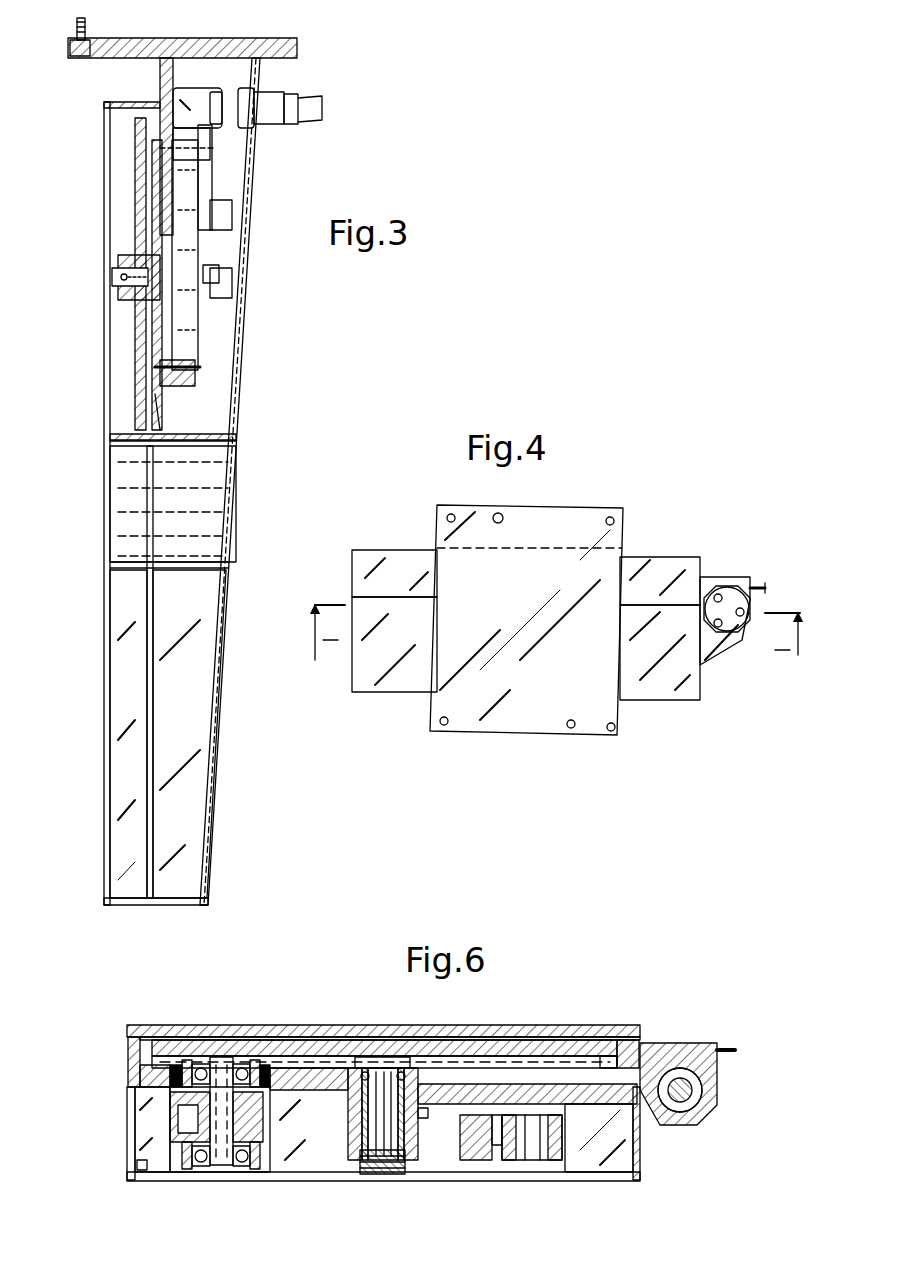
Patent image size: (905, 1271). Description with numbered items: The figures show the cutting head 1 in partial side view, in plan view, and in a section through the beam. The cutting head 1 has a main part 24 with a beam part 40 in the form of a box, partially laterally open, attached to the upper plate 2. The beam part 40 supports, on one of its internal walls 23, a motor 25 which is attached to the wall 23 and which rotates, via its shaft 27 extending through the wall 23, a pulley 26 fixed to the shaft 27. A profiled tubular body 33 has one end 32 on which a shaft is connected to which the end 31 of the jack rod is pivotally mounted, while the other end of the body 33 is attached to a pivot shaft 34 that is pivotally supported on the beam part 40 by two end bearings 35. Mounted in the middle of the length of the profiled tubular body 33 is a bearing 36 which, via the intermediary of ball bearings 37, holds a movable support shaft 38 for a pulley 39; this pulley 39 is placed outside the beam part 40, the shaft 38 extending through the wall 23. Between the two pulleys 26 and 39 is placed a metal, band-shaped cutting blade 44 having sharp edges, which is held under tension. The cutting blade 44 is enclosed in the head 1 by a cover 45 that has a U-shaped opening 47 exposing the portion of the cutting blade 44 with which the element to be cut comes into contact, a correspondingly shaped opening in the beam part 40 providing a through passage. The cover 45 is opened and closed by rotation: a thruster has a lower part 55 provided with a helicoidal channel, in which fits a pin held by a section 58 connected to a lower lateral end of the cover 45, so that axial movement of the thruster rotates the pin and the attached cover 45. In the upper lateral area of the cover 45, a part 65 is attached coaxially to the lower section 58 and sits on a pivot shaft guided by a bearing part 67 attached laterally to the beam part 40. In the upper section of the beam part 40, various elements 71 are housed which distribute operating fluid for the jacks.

In FIG. 3, the cutting head 1 is at (93, 215).
In FIG. 4, the cutting head 1 is at (665, 540).
In FIG. 6, the cutting head 1 is at (562, 1025).
In FIG. 3, the upper plate 2 is at (297, 48).
In FIG. 4, the upper plate 2 is at (583, 528).
In FIG. 3, the internal wall 23 is at (160, 430).
In FIG. 6, the internal wall 23 is at (140, 1077).
In FIG. 3, the main part 24 is at (228, 665).
In FIG. 4, the main part 24 is at (397, 700).
In FIG. 6, the main part 24 is at (125, 1125).
In FIG. 3, the motor 25 is at (200, 345).
In FIG. 3, the pulley 26 is at (140, 360).
In FIG. 3, the shaft 27 is at (118, 275).
In FIG. 6, the end of rod 31 is at (548, 1162).
In FIG. 6, the end of profiled tubular body 32 is at (518, 1160).
In FIG. 6, the profiled tubular body 33 is at (455, 1140).
In FIG. 6, the pivot shaft 34 is at (221, 1167).
In FIG. 6, the end bearings 35 is at (203, 1060).
In FIG. 6, the bearing 36 is at (355, 1130).
In FIG. 6, the ball bearings 37 is at (382, 1057).
In FIG. 6, the movable support shaft 38 is at (382, 1175).
In FIG. 6, the pulley 39 is at (508, 1050).
In FIG. 3, the beam part 40 is at (238, 438).
In FIG. 4, the beam part 40 is at (660, 690).
In FIG. 6, the beam part 40 is at (640, 1140).
In FIG. 6, the cutting blade 44 is at (622, 1058).
In FIG. 3, the cover 45 is at (110, 660).
In FIG. 4, the cover 45 is at (400, 570).
In FIG. 6, the cover 45 is at (478, 1037).
In FIG. 3, the U-shaped opening 47 is at (155, 510).
In FIG. 6, the lower part of thruster 55 is at (695, 1108).
In FIG. 6, the section 58 is at (710, 1088).
In FIG. 4, the part 65 is at (740, 585).
In FIG. 4, the bearing part 67 is at (705, 650).
In FIG. 3, the elements distributing operating fluid 71 is at (208, 78).